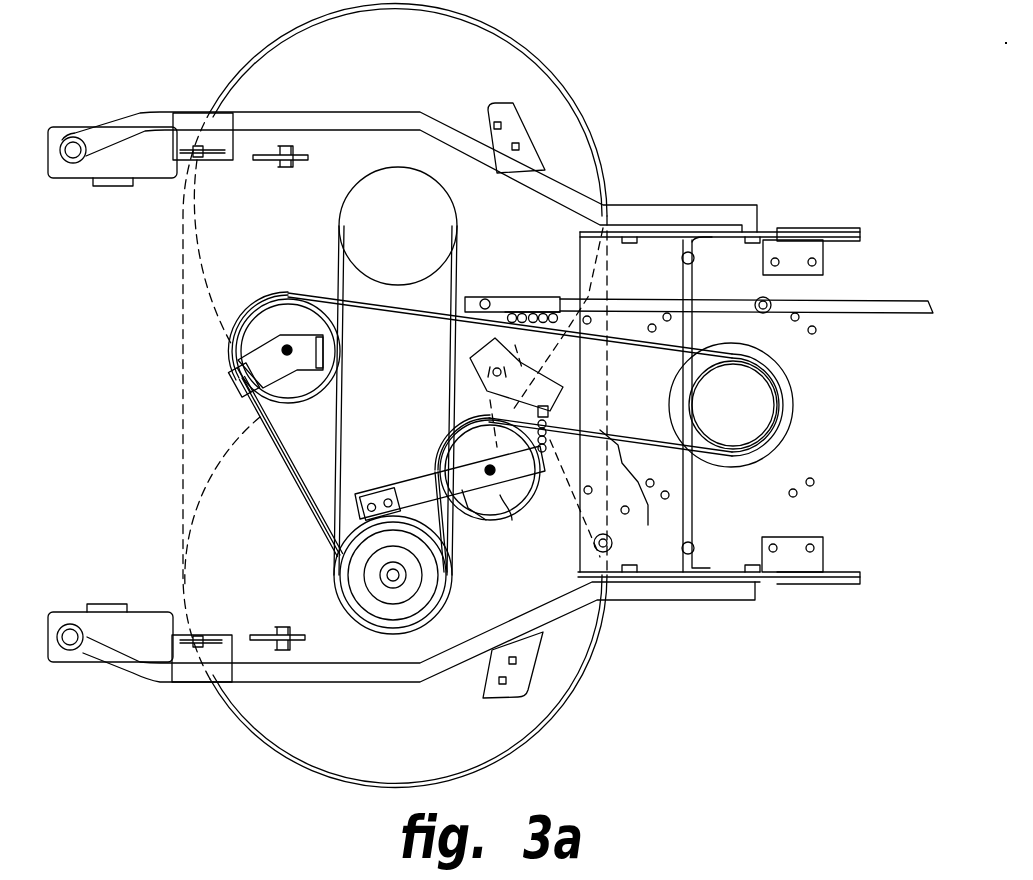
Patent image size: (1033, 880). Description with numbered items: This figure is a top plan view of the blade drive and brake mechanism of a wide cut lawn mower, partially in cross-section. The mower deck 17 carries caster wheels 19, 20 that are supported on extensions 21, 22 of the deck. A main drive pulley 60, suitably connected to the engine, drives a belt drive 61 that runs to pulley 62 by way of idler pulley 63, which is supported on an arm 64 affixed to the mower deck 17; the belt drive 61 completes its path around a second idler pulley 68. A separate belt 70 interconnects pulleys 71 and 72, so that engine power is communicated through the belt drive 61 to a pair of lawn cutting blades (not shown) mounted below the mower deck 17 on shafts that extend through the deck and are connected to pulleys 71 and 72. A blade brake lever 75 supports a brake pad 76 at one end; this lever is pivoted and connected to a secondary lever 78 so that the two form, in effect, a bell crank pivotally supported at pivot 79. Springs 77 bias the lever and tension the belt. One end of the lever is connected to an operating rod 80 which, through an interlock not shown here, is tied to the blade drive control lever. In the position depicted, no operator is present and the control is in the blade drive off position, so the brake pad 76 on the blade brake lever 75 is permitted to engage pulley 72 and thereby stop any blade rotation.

The mower deck 17 is at (470, 68).
The wheel 19 is at (147, 616).
The wheel 20 is at (150, 170).
The extension 21 is at (128, 680).
The extension 22 is at (126, 118).
The main drive pulley 60 is at (790, 403).
The belt drive 61 is at (719, 406).
The pulley 62 is at (344, 548).
The idler pulley 63 is at (270, 322).
The arm 64 is at (238, 384).
The idler pulley 68 is at (512, 500).
The belt 70 is at (455, 276).
The pulley 71 is at (398, 226).
The pulley 72 is at (450, 596).
The blade brake lever 75 is at (418, 472).
The brake pad 76 is at (372, 490).
The springs 77 is at (530, 318).
The secondary lever 78 is at (478, 298).
The pivot 79 is at (488, 520).
The operating rod 80 is at (888, 300).